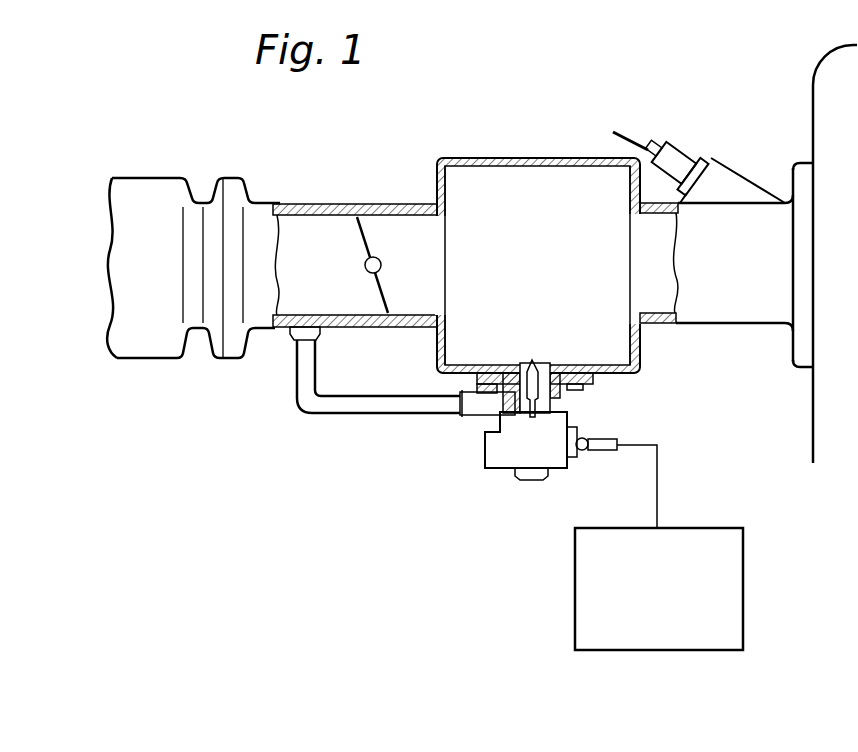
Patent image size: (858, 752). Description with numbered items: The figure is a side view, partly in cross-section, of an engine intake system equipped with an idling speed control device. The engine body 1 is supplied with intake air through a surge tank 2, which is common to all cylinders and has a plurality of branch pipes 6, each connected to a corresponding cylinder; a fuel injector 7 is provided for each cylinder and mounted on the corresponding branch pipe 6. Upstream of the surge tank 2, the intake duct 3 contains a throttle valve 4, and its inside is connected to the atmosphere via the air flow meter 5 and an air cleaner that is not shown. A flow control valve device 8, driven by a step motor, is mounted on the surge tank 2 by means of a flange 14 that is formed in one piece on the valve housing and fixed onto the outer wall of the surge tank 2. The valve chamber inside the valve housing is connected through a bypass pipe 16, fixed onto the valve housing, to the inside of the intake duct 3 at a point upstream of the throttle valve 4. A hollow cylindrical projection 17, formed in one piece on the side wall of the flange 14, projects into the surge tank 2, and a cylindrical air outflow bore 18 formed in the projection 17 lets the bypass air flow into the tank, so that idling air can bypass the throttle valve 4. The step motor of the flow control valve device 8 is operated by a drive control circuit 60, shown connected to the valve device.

The engine body 1 is at (813, 97).
The surge tank 2 is at (477, 158).
The intake duct 3 is at (313, 204).
The throttle valve 4 is at (376, 236).
The air flow meter 5 is at (143, 188).
The branch pipe 6 is at (723, 324).
The fuel injector 7 is at (675, 155).
The flow control valve device 8 is at (500, 452).
The flange 14 is at (592, 380).
The bypass pipe 16 is at (480, 415).
The hollow cylindrical projection 17 is at (517, 362).
The air outflow bore 18 is at (539, 361).
The drive control circuit 60 is at (745, 596).